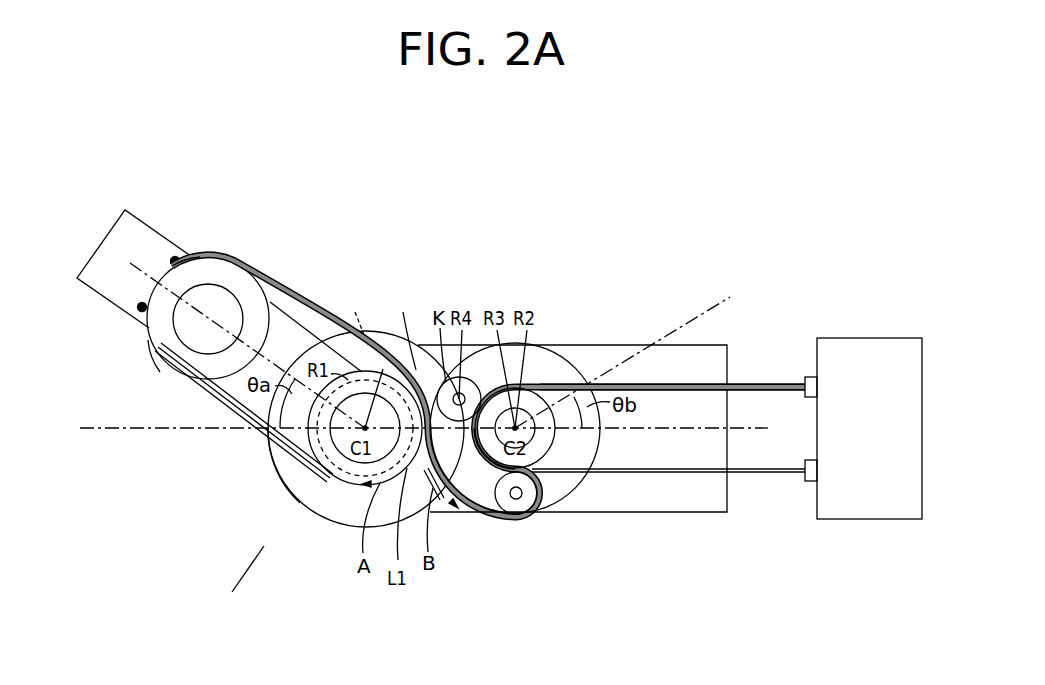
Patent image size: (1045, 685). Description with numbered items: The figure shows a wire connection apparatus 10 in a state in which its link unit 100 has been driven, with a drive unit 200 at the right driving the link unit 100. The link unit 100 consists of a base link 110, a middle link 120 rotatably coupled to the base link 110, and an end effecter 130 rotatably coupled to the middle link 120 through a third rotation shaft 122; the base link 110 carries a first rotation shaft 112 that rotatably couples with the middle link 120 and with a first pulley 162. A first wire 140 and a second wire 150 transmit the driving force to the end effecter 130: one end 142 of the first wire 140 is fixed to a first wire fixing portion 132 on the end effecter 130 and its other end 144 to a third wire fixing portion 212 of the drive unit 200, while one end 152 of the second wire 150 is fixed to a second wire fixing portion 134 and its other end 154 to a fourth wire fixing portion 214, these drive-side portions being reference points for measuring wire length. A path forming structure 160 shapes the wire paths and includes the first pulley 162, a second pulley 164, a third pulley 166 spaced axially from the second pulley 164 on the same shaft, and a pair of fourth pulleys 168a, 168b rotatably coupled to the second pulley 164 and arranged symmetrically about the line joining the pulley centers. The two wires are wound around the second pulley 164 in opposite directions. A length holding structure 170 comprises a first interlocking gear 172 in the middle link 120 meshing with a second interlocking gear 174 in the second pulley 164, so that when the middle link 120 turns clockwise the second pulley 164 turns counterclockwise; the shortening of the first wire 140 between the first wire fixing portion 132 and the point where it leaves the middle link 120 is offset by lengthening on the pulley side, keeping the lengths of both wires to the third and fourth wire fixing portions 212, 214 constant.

The wire connection apparatus 10 is at (530, 225).
The link unit 100 is at (268, 540).
The base link 110 is at (708, 498).
The first rotation shaft 112 is at (325, 515).
The middle link 120 is at (222, 398).
The third rotation shaft 122 is at (188, 338).
The end effecter 130 is at (100, 258).
The first wire fixing portion 132 is at (175, 256).
The second wire fixing portion 134 is at (137, 307).
The first wire 140 is at (276, 280).
The one end of the first wire 142 is at (192, 255).
The other end of the first wire 144 is at (802, 385).
The second wire 150 is at (288, 468).
The one end of the second wire 152 is at (140, 324).
The other end of the second wire 154 is at (803, 473).
The path forming structure 160 is at (660, 598).
The first pulley 162 is at (430, 482).
The second pulley 164 is at (560, 487).
The third pulley 166 is at (597, 493).
The fourth pulley 168a is at (493, 507).
The fourth pulley 168b is at (537, 515).
The length holding structure 170 is at (413, 285).
The first interlocking gear 172 is at (351, 317).
The second interlocking gear 174 is at (404, 329).
The drive unit 200 is at (860, 338).
The third wire fixing portion 212 is at (808, 376).
The fourth wire fixing portion 214 is at (810, 483).